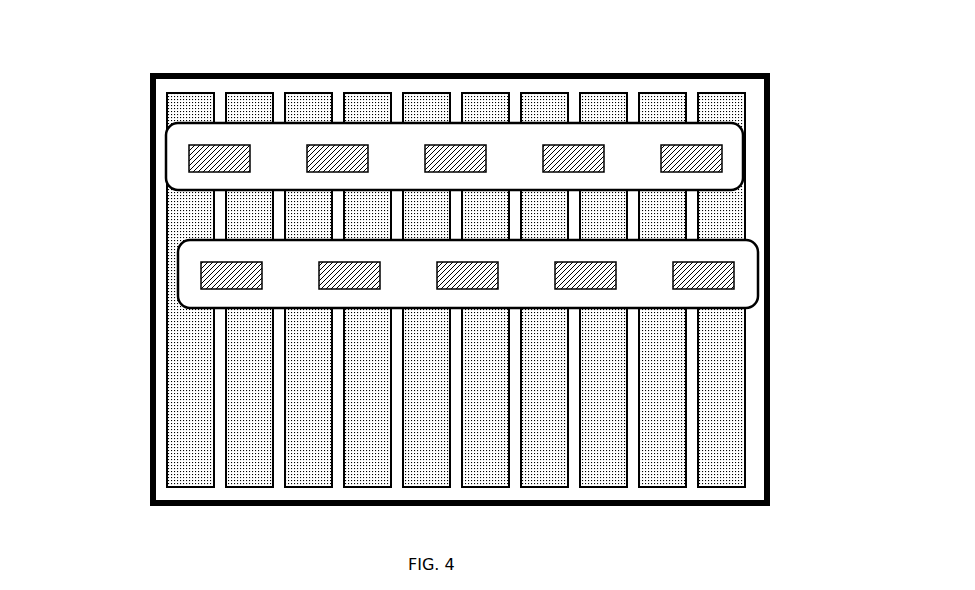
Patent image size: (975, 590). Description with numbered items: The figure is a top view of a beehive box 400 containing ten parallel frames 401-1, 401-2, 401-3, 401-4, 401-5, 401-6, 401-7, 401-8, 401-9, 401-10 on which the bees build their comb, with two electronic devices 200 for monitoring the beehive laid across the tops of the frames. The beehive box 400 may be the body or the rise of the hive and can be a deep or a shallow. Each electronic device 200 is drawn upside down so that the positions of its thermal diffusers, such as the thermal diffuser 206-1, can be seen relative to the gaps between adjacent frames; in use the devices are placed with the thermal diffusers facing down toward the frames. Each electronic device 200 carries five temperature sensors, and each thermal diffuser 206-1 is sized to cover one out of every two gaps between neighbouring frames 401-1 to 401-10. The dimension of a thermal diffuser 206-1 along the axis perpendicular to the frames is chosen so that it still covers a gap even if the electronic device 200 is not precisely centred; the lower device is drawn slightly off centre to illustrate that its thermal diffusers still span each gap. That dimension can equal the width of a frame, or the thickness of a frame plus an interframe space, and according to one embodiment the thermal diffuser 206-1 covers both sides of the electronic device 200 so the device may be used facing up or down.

The beehive box 400 is at (150, 168).
The electronic device 200 is at (486, 205).
The thermal diffuser 206-1 is at (147, 144).
The frame 401-1 is at (202, 261).
The frame 401-2 is at (248, 325).
The frame 401-3 is at (319, 261).
The frame 401-4 is at (364, 325).
The frame 401-5 is at (436, 261).
The frame 401-6 is at (484, 325).
The frame 401-7 is at (553, 261).
The frame 401-8 is at (602, 325).
The frame 401-9 is at (670, 261).
The frame 401-10 is at (723, 326).